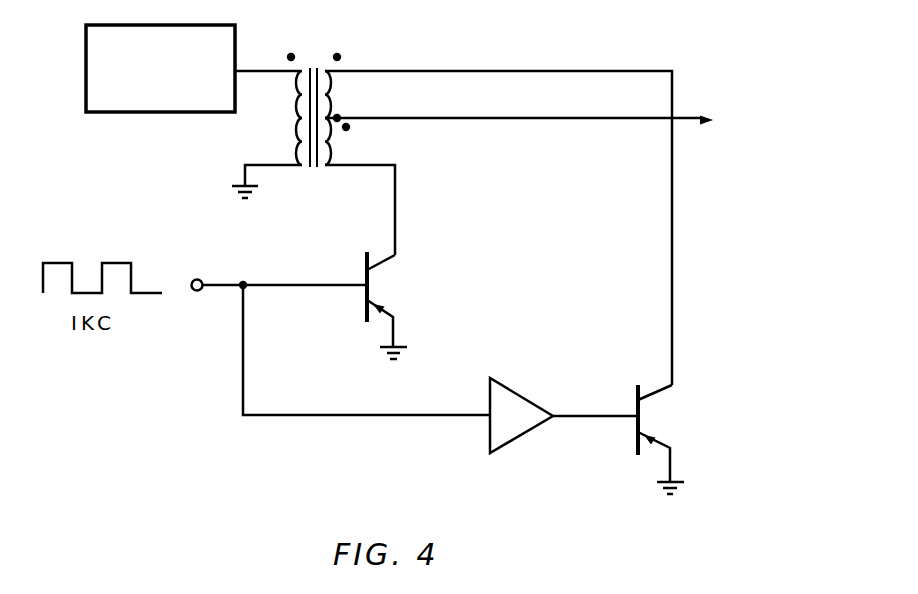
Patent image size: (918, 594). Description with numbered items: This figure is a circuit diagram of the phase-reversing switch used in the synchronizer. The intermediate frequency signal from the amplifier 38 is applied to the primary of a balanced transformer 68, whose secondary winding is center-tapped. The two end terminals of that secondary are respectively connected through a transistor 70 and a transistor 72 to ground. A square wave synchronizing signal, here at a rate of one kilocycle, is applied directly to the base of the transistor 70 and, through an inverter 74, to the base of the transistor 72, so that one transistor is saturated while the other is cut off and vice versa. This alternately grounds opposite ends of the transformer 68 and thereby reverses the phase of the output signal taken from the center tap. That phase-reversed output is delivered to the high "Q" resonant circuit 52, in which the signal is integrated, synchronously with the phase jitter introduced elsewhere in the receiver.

The amplifier 38 is at (225, 25).
The balanced transformer 68 is at (313, 63).
The transistor 70 is at (371, 272).
The transistor 72 is at (642, 405).
The inverter 74 is at (518, 390).
The high "Q" resonant circuit 52 is at (761, 162).